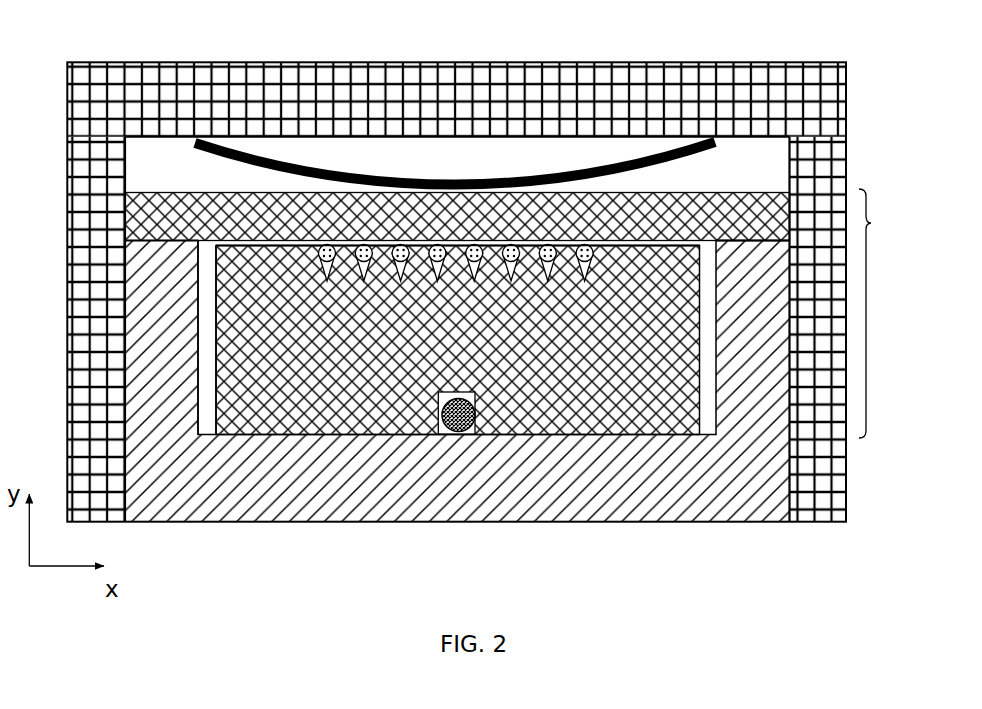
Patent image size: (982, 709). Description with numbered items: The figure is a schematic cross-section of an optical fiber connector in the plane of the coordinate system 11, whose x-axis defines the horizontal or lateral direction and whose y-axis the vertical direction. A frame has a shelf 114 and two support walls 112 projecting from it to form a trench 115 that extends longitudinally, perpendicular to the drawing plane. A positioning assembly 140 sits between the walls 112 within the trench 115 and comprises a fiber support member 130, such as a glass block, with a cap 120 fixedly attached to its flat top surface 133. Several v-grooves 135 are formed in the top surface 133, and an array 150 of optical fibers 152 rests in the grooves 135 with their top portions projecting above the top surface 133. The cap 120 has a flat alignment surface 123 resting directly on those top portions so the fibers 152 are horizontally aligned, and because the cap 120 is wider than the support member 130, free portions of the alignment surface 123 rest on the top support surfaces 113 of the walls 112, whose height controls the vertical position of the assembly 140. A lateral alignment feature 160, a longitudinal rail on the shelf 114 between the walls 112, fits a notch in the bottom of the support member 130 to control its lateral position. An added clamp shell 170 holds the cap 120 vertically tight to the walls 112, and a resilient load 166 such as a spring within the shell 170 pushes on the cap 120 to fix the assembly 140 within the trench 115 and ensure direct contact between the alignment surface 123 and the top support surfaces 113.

The coordinate system 11 is at (46, 602).
The clamp shell 170 is at (467, 121).
The resilient load 166 is at (389, 178).
The cap 120 is at (495, 228).
The alignment surface 123 is at (155, 231).
The trench 115 is at (210, 240).
The array of optical fibers 150 is at (594, 243).
The support walls 112 is at (182, 358).
The top support surfaces 113 is at (752, 254).
The shelf 114 is at (485, 485).
The fiber support member 130 is at (477, 358).
The top surface 133 is at (272, 258).
The grooves 135 is at (482, 277).
The optical fibers 152 is at (360, 266).
The lateral alignment feature 160 is at (463, 392).
The positioning assembly 140 is at (891, 313).